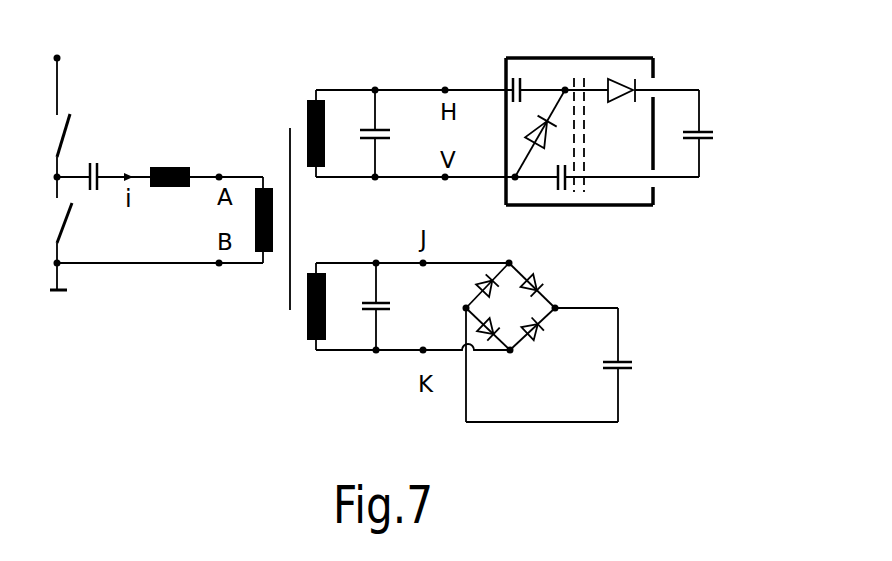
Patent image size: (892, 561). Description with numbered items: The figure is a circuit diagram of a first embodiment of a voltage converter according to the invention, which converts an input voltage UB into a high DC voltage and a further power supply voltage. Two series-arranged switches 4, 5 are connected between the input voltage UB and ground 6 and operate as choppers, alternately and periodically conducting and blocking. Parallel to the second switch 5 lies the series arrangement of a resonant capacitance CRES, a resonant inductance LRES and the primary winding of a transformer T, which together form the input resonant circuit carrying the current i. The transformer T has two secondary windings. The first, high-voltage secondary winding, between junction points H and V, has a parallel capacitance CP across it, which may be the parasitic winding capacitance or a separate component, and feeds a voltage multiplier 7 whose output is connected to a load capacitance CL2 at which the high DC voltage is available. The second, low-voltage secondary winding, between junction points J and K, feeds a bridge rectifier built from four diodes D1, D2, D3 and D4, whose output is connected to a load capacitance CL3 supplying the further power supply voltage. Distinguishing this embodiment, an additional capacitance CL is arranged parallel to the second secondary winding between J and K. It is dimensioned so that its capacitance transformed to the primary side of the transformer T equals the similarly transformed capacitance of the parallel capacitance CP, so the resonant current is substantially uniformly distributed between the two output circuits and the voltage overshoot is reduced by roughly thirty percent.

The switch 4 is at (62, 132).
The switch 5 is at (62, 222).
The ground 6 is at (50, 290).
The voltage multiplier 7 is at (587, 57).
The input voltage UB is at (54, 64).
The resonant capacitance CRES is at (100, 163).
The resonant inductance LRES is at (176, 165).
The transformer T is at (290, 184).
The parallel capacitance CP is at (390, 133).
The load capacitance CL2 is at (723, 133).
The additional capacitance CL is at (392, 306).
The load capacitance CL3 is at (574, 365).
The diode D1 is at (542, 276).
The diode D2 is at (540, 332).
The diode D3 is at (478, 332).
The diode D4 is at (478, 284).